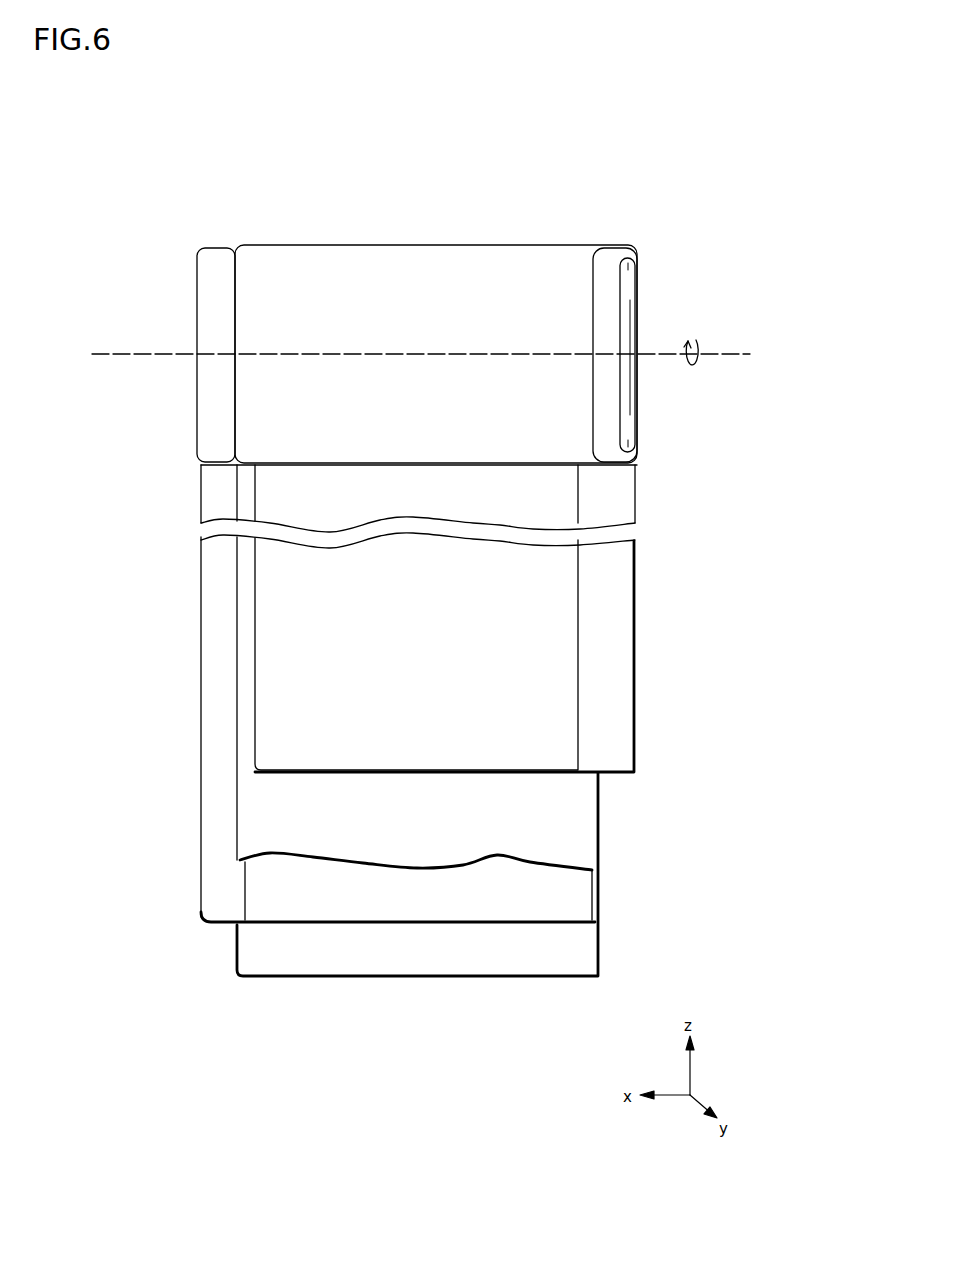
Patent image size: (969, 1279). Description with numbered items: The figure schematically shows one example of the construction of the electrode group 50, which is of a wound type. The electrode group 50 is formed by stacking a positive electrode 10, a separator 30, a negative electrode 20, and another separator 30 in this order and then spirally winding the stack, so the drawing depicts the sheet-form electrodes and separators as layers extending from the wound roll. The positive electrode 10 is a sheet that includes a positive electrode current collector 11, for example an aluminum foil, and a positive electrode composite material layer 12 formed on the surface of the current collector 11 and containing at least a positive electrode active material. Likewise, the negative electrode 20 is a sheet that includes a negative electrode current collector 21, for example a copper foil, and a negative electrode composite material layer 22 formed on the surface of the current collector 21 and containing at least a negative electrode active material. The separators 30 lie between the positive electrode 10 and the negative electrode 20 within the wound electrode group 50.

The electrode group 50 is at (176, 196).
The positive electrode 10 is at (748, 550).
The positive electrode current collector 11 is at (617, 647).
The positive electrode composite material layer 12 is at (570, 600).
The negative electrode 20 is at (76, 770).
The negative electrode current collector 21 is at (203, 827).
The negative electrode composite material layer 22 is at (287, 903).
The separator 30 is at (600, 830).